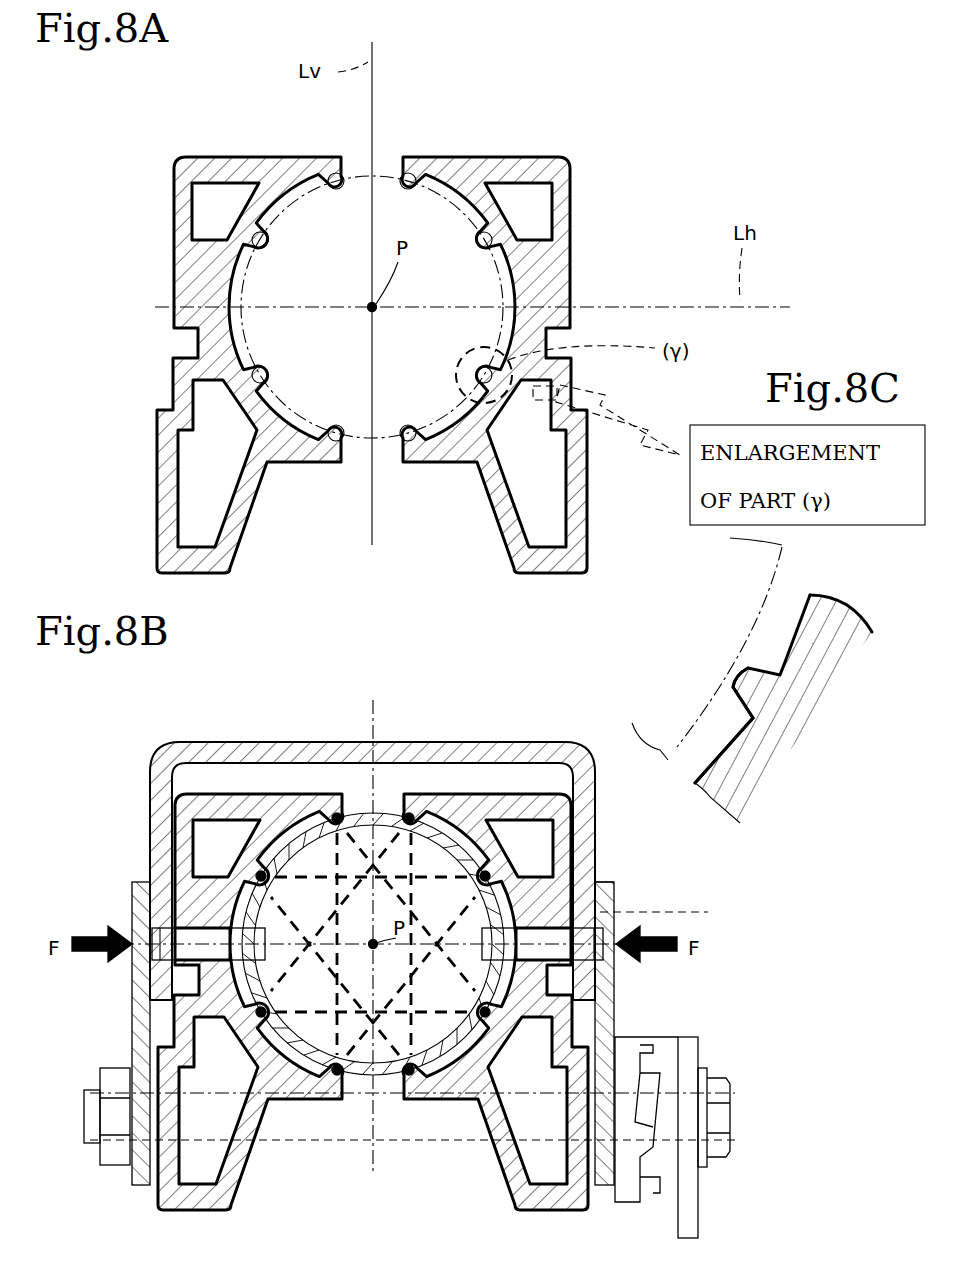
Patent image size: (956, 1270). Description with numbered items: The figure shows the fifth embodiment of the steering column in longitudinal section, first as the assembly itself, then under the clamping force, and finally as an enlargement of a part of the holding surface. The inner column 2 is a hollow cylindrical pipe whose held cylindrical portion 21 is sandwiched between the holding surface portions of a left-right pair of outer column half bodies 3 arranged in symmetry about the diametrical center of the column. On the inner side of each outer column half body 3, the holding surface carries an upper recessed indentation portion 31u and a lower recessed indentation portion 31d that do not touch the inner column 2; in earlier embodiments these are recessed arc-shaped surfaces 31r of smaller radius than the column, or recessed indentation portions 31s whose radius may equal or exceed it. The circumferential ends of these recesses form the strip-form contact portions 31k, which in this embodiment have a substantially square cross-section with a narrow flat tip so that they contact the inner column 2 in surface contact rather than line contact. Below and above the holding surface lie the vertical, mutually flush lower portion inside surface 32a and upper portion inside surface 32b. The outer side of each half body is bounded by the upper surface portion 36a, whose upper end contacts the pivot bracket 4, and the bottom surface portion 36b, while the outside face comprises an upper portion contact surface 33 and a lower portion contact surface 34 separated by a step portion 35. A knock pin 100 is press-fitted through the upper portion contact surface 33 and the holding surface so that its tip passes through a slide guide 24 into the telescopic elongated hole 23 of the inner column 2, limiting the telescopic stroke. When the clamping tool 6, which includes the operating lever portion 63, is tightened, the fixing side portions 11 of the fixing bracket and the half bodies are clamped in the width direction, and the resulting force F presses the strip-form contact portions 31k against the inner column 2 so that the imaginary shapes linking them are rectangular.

In FIG. 8A, the inner column 2 is at (356, 176).
In FIG. 8C, the inner column 2 is at (782, 565).
In FIG. 8B, the inner column 2 is at (350, 802).
In FIG. 8A, the outer column half body 3 is at (168, 198).
In FIG. 8B, the outer column half body 3 is at (373, 1002).
In FIG. 8B, the pivot bracket 4 is at (548, 740).
In FIG. 8B, the clamping tool 6 is at (736, 1102).
In FIG. 8B, the fixing side portion 11 is at (142, 1006).
In FIG. 8B, the held cylindrical portion 21 is at (372, 830).
In FIG. 8B, the telescopic elongated hole 23 is at (669, 913).
In FIG. 8B, the slide guide 24 is at (604, 882).
In FIG. 8A, the recessed indentation portion 31s is at (258, 185).
In FIG. 8C, the recessed indentation portion 31s is at (775, 662).
In FIG. 8B, the recessed indentation portion 31s is at (284, 826).
In FIG. 8A, the strip-form contact portion 31k is at (336, 190).
In FIG. 8C, the strip-form contact portion 31k is at (745, 684).
In FIG. 8B, the strip-form contact portion 31k is at (336, 818).
In FIG. 8A, the upper recessed indentation portion 31u is at (230, 262).
In FIG. 8B, the upper recessed indentation portion 31u is at (240, 868).
In FIG. 8A, the lower recessed indentation portion 31d is at (288, 442).
In FIG. 8C, the lower recessed indentation portion 31d is at (718, 758).
In FIG. 8B, the lower recessed indentation portion 31d is at (264, 1102).
In FIG. 8A, the recessed arc-shaped surface 31r is at (487, 430).
In FIG. 8B, the recessed arc-shaped surface 31r is at (258, 1018).
In FIG. 8A, the lower portion inside surface 32a is at (394, 456).
In FIG. 8A, the upper portion inside surface 32b is at (402, 168).
In FIG. 8A, the upper portion contact surface 33 is at (572, 292).
In FIG. 8A, the lower portion contact surface 34 is at (588, 484).
In FIG. 8A, the step portion 35 is at (560, 392).
In FIG. 8B, the upper surface portion 36a is at (380, 812).
In FIG. 8B, the bottom surface portion 36b is at (390, 1092).
In FIG. 8B, the operating lever portion 63 is at (698, 1202).
In FIG. 8B, the knock pin 100 is at (134, 905).